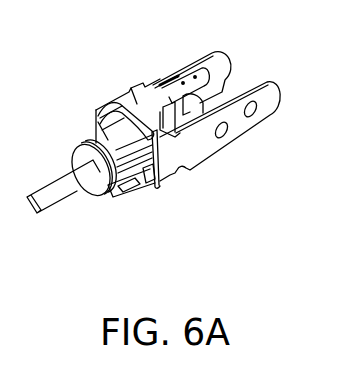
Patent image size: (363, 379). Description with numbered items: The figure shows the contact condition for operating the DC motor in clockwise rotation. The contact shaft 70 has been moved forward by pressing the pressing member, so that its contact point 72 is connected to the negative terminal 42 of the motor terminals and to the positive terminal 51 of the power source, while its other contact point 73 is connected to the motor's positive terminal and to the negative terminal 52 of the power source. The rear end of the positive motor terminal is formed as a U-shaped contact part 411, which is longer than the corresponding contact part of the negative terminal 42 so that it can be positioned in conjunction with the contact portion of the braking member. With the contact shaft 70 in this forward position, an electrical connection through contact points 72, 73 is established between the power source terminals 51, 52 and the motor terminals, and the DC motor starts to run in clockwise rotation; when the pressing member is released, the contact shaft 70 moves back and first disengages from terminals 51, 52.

The negative terminal 42 is at (143, 107).
The positive terminal 51 is at (220, 70).
The negative terminal 52 is at (271, 107).
The contact shaft 70 is at (112, 146).
The contact point 72 is at (97, 120).
The contact point 73 is at (144, 182).
The U-shaped contact part 411 is at (121, 190).